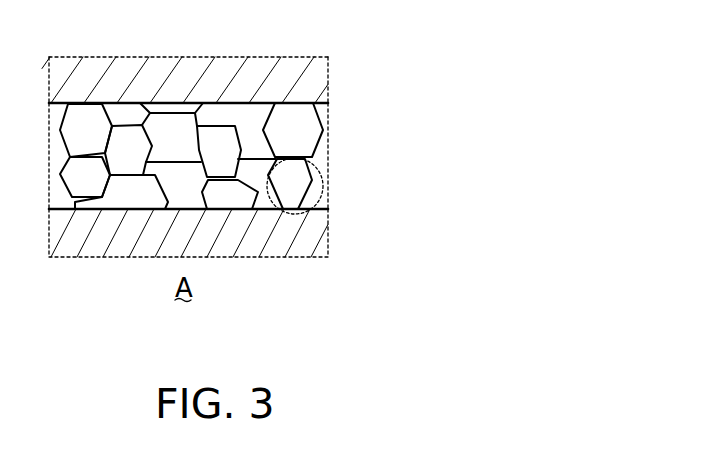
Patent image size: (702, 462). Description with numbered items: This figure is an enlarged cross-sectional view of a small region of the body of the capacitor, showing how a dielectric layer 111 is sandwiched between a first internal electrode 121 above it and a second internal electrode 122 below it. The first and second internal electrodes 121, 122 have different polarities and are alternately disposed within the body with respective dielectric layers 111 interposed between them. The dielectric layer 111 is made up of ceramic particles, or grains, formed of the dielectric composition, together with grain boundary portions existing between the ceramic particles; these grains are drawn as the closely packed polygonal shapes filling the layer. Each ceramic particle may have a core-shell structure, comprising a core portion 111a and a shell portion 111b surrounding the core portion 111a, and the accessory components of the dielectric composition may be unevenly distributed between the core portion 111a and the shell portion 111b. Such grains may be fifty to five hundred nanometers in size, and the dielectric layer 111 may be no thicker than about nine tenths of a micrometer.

The first internal electrode 121 is at (328, 72).
The second internal electrode 122 is at (328, 230).
The dielectric layer 111 is at (340, 104).
The core portion 111a is at (292, 143).
The shell portion 111b is at (310, 188).